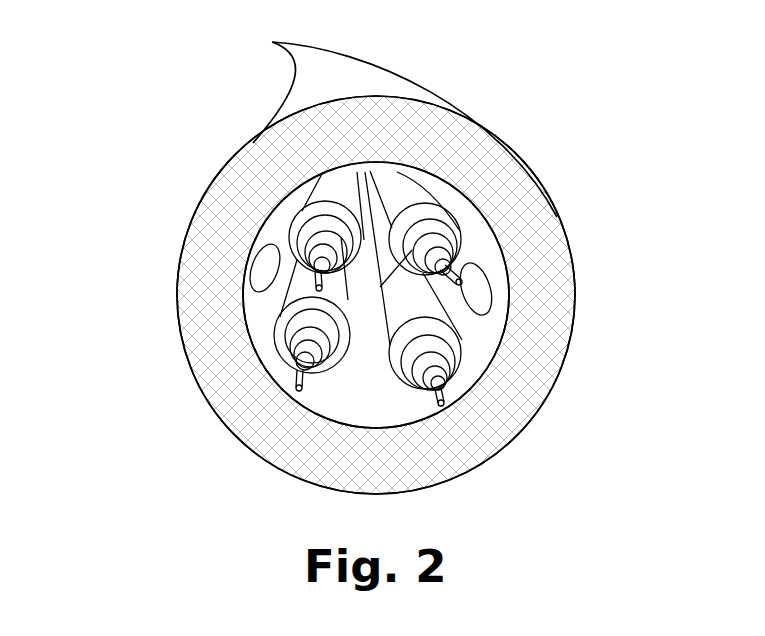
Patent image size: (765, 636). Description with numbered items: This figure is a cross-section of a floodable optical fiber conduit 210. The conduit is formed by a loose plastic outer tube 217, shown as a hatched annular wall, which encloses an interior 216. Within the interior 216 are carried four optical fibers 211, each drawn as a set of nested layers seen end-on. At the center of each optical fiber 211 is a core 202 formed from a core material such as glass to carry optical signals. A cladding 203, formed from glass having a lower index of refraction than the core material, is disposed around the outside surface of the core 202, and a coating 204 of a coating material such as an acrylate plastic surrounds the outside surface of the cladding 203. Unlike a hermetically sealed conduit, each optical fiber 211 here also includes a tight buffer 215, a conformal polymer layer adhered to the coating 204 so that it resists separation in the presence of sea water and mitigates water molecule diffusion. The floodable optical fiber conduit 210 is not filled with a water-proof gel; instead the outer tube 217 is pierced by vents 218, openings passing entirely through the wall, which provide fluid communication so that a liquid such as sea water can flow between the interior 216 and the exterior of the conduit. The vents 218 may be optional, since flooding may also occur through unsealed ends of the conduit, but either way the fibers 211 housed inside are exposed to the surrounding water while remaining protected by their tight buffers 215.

The floodable optical fiber conduit 210 is at (139, 95).
The core 202 is at (305, 265).
The cladding 203 is at (316, 244).
The coating 204 is at (329, 232).
The optical fibers 211 is at (277, 320).
The tight buffer 215 is at (460, 232).
The interior 216 is at (323, 400).
The outer tube 217 is at (540, 322).
The vents 218 is at (493, 285).